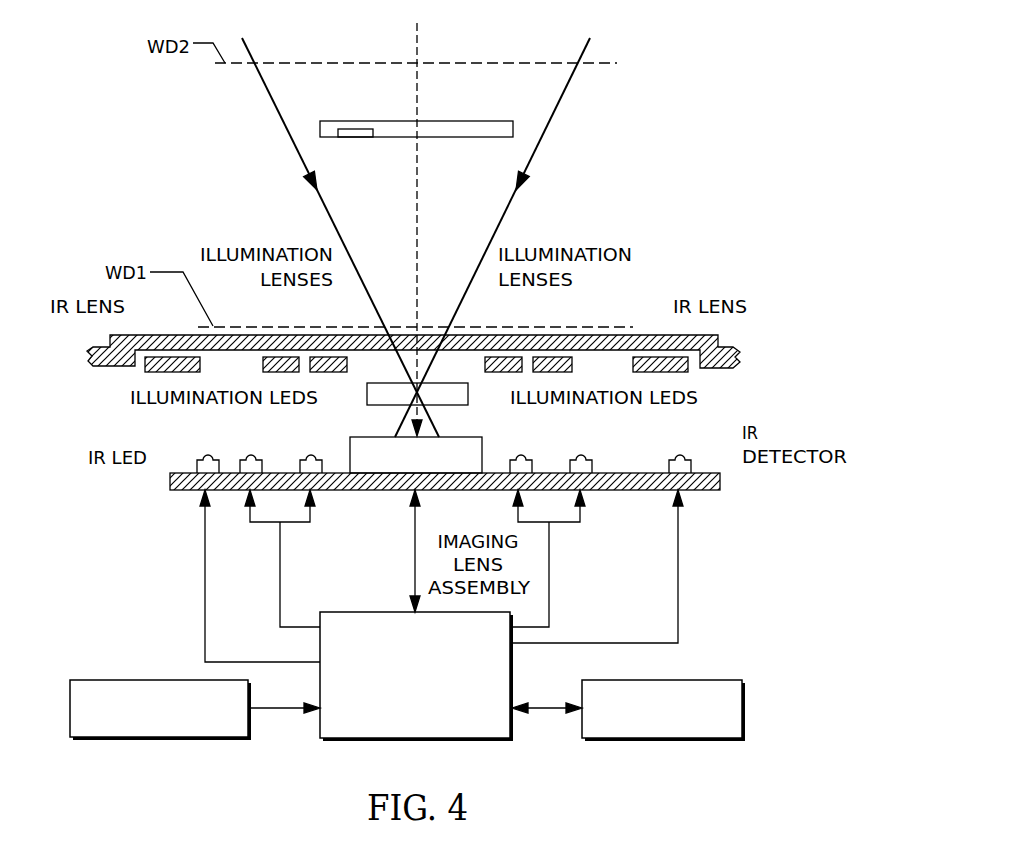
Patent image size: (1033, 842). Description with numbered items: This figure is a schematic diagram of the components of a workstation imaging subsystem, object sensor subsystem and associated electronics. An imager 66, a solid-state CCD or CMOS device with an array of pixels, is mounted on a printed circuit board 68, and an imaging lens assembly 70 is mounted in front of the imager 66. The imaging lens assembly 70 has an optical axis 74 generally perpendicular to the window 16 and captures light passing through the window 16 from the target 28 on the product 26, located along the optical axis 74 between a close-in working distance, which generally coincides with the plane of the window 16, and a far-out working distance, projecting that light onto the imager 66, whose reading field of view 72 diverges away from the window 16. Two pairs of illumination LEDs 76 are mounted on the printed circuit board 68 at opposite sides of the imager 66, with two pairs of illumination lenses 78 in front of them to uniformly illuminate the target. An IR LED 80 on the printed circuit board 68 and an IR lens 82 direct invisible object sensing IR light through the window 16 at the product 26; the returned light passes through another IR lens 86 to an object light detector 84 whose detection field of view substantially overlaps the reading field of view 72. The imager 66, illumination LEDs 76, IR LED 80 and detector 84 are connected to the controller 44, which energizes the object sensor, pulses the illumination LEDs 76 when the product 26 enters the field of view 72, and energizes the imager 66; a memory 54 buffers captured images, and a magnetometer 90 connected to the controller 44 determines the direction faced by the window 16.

The window 16 is at (115, 338).
The product 26 is at (465, 121).
The target 28 is at (363, 137).
The controller 44 is at (513, 674).
The memory 54 is at (742, 708).
The imager 66 is at (357, 437).
The printed circuit board 68 is at (722, 483).
The imaging lens assembly 70 is at (452, 397).
The reading field of view 72 is at (563, 88).
The optical axis 74 is at (417, 42).
The illumination LEDs 76 is at (251, 456).
The illumination lenses 78 is at (287, 357).
The IR LED 80 is at (200, 460).
The IR lens 82 is at (152, 357).
The object light detector 84 is at (690, 460).
The IR lens 86 is at (667, 357).
The magnetometer 90 is at (70, 707).